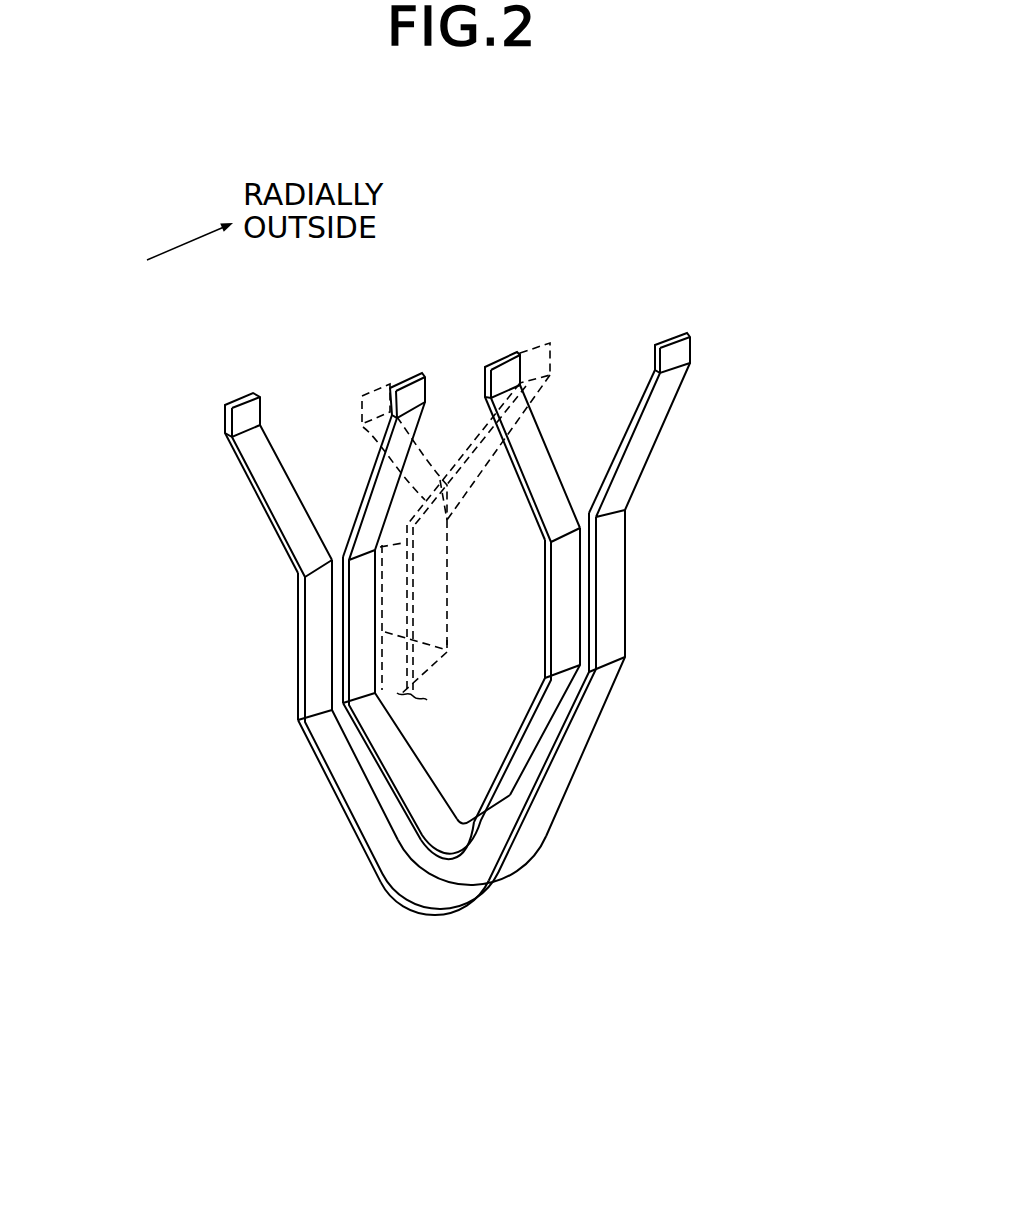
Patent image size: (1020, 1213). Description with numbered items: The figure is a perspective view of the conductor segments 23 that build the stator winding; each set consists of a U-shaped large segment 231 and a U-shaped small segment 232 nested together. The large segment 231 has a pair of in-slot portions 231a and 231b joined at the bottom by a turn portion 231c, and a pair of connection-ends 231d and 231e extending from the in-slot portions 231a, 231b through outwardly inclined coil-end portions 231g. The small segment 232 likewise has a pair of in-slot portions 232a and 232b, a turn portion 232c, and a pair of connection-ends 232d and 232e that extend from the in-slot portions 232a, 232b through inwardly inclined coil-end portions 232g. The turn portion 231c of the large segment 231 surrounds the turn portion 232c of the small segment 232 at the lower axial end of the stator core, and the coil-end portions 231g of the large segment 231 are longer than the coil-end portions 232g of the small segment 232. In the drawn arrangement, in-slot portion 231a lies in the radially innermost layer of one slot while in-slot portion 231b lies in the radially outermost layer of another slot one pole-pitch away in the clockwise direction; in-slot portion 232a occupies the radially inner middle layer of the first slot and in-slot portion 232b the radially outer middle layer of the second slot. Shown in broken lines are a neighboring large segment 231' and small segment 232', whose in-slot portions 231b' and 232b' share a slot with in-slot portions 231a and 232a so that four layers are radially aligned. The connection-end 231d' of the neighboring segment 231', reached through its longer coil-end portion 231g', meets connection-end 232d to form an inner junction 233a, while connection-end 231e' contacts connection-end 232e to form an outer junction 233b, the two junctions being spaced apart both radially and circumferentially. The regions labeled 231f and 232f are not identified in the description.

The conductor segments 23 is at (375, 901).
The large segment 231 is at (539, 546).
The in-slot portion 231a is at (315, 600).
The in-slot portion 231b is at (655, 695).
The turn portion 231c is at (452, 902).
The connection-end 231d is at (177, 481).
The connection-end 231e is at (734, 417).
The inclined portion of first spring plate 231f is at (362, 790).
The coil-end portions 231g is at (471, 461).
The small segment 232 is at (564, 512).
The in-slot portion 232a is at (367, 660).
The in-slot portion 232b is at (636, 675).
The turn portion 232c is at (465, 843).
The connection-end 232d is at (413, 373).
The connection-end 232e is at (503, 352).
The inclined portion of second spring plate 232f is at (413, 788).
The coil-end portions 232g is at (357, 490).
The inner junction 233a is at (383, 366).
The outer junction 233b is at (525, 322).
The large U-shaped conductor segment 231' is at (577, 622).
The small conductor segment 232' is at (297, 635).
The connection-end 231d' is at (330, 410).
The connection-end 231e' is at (535, 401).
The coil-end portion 231g' is at (618, 502).
The in-slot portion 231b' is at (621, 585).
The in-slot portion 232b' is at (604, 710).